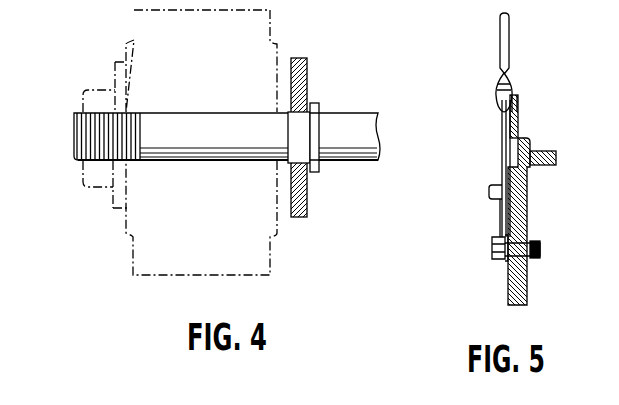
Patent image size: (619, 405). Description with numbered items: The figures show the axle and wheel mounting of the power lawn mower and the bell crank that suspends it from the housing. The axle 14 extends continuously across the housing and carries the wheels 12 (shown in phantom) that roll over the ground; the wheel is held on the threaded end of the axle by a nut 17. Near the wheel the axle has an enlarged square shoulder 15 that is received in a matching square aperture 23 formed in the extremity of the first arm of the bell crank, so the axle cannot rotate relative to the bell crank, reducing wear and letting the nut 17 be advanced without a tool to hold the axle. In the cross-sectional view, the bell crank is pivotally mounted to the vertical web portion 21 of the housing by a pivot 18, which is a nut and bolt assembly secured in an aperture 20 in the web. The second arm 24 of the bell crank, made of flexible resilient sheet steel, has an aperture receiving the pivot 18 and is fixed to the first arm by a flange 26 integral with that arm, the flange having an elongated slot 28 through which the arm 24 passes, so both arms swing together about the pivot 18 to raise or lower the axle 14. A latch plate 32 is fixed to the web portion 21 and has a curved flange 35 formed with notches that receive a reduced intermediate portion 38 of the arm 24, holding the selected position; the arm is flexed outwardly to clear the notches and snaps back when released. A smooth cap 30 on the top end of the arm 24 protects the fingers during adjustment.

In FIG. 4, the wheel 12 is at (270, 22).
In FIG. 4, the axle 14 is at (198, 113).
In FIG. 4, the square shoulder 15 is at (288, 135).
In FIG. 4, the nut 17 is at (97, 88).
In FIG. 4, the square aperture 23 is at (319, 112).
In FIG. 5, the cap 30 is at (509, 28).
In FIG. 5, the intermediate portion 38 is at (496, 78).
In FIG. 5, the curved flange 35 is at (517, 97).
In FIG. 5, the second arm 24 is at (505, 141).
In FIG. 5, the latch plate 32 is at (519, 130).
In FIG. 5, the vertical web portion 21 is at (521, 207).
In FIG. 5, the flange 26 is at (489, 190).
In FIG. 5, the elongated slot 28 is at (496, 198).
In FIG. 5, the pivot 18 is at (530, 246).
In FIG. 5, the aperture 20 is at (535, 262).